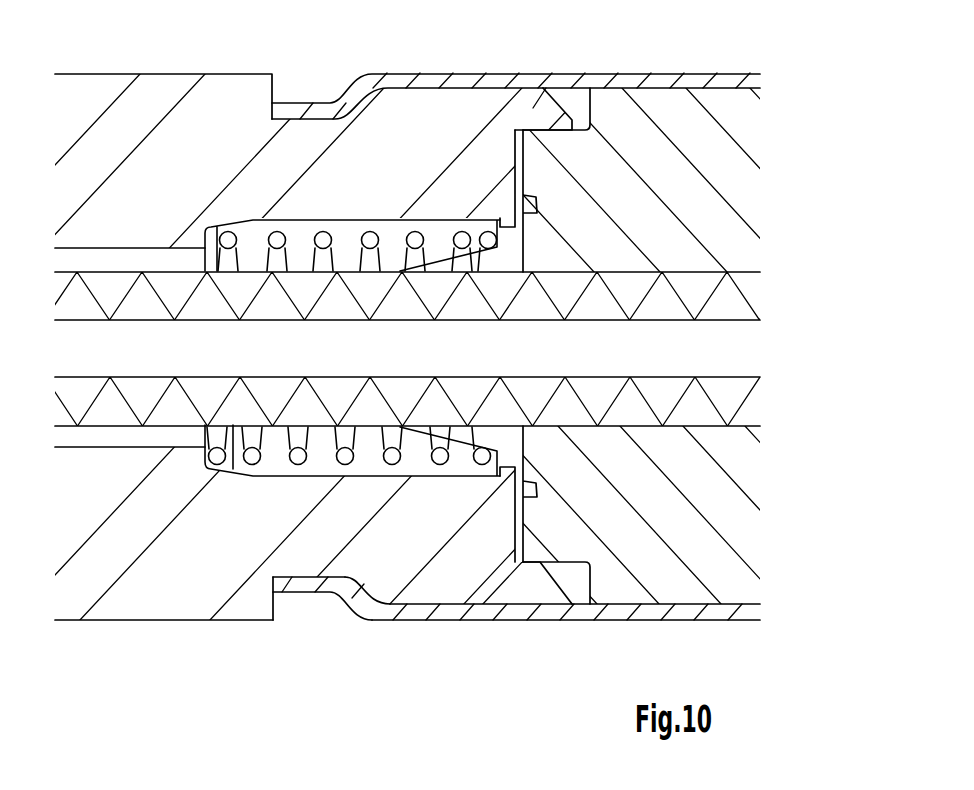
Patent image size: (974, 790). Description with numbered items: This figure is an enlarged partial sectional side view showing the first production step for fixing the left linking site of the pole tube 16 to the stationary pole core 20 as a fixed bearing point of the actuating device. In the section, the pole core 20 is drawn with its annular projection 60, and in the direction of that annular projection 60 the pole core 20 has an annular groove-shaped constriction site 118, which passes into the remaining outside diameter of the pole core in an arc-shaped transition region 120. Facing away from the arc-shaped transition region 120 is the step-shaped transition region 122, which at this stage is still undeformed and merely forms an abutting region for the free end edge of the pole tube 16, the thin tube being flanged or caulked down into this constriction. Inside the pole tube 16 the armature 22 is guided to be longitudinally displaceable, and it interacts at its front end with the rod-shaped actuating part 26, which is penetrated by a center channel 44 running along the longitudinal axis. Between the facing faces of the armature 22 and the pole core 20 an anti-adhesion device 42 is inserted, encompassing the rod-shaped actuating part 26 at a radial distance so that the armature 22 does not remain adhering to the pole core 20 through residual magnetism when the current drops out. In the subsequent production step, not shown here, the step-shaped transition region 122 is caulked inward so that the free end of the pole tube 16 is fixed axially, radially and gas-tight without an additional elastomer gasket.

The pole tube 16 is at (557, 610).
The pole core 20 is at (427, 550).
The armature 22 is at (698, 212).
The rod-shaped actuating part 26 is at (733, 298).
The anti-adhesion device 42 is at (522, 178).
The center channel 44 is at (715, 345).
The annular projection 60 is at (535, 105).
The annular groove-shaped constriction site 118 is at (298, 578).
The arc-shaped transition region 120 is at (367, 615).
The step-shaped transition region 122 is at (267, 608).